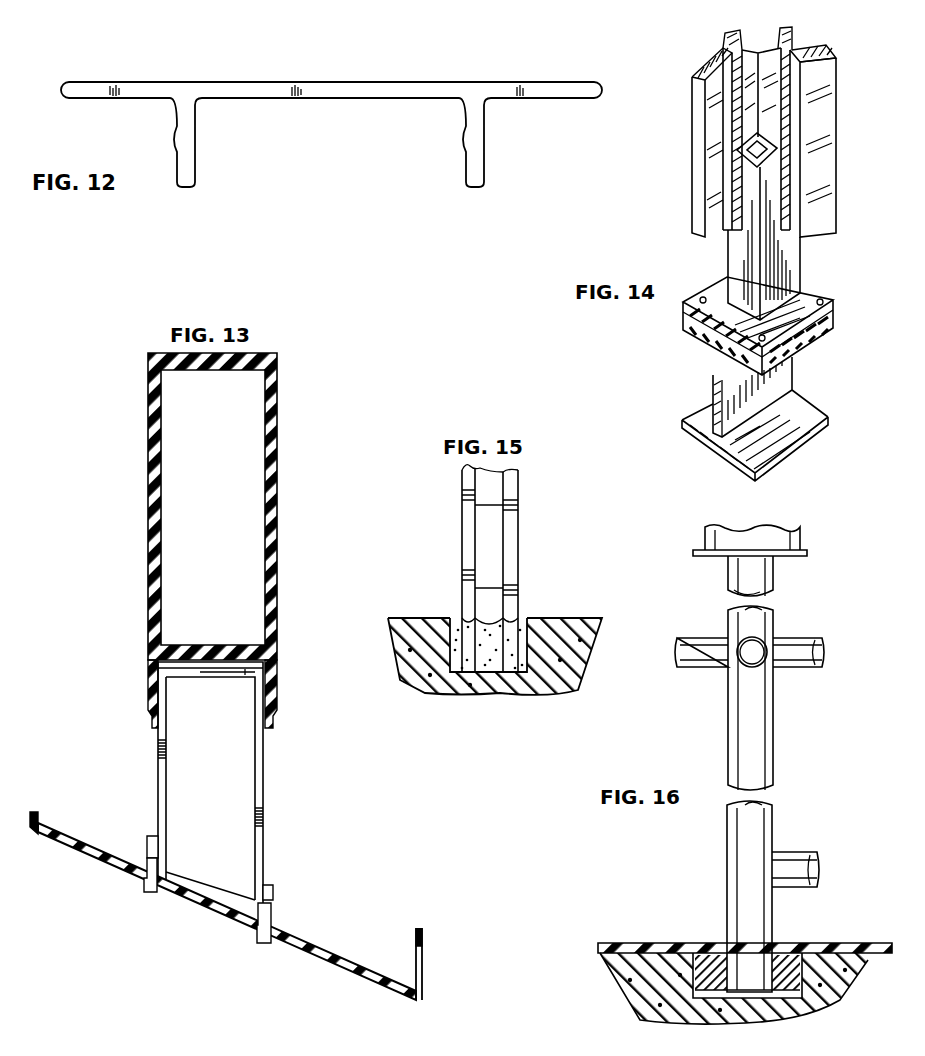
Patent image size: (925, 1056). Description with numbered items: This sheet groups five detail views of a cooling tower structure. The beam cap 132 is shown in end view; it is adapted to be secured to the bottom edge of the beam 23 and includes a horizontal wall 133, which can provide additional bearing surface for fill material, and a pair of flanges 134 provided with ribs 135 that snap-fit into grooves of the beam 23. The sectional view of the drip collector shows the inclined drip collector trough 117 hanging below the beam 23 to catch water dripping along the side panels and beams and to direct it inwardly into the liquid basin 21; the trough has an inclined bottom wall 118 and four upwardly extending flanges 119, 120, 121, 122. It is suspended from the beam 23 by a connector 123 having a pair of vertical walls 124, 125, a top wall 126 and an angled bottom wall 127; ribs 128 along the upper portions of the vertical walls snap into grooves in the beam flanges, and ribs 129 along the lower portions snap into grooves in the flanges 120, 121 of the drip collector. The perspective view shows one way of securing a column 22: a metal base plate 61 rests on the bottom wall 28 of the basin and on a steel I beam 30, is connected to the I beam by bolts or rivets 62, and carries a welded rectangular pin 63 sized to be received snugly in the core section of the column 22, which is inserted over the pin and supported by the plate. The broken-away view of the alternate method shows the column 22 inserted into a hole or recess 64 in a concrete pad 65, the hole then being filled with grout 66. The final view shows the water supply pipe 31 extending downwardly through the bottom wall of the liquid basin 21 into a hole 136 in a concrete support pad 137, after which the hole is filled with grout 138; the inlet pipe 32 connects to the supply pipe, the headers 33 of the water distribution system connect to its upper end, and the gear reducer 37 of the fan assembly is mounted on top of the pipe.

In FIG. 12, the beam cap 132 is at (345, 85).
In FIG. 12, the horizontal wall 133 is at (232, 82).
In FIG. 12, the flanges 134 is at (195, 170).
In FIG. 12, the ribs 135 is at (173, 140).
In FIG. 14, the column 22 is at (836, 115).
In FIG. 15, the column 22 is at (512, 517).
In FIG. 14, the metal base plate 61 is at (805, 282).
In FIG. 14, the rectangular pin 63 is at (735, 257).
In FIG. 14, the bottom wall 28 is at (683, 316).
In FIG. 14, the bolts or rivets 62 is at (818, 303).
In FIG. 14, the steel I beam 30 is at (803, 400).
In FIG. 13, the beam 23 is at (152, 442).
In FIG. 13, the ribs 128 is at (153, 712).
In FIG. 13, the connector 123 is at (263, 797).
In FIG. 13, the top wall 126 is at (222, 677).
In FIG. 13, the vertical wall 124 is at (158, 753).
In FIG. 13, the vertical wall 125 is at (263, 830).
In FIG. 13, the angled bottom wall 127 is at (200, 888).
In FIG. 13, the inclined drip collector trough 117 is at (322, 952).
In FIG. 13, the inclined bottom wall 118 is at (322, 963).
In FIG. 13, the flange 119 is at (35, 818).
In FIG. 13, the flange 122 is at (423, 958).
In FIG. 13, the flange 120 is at (147, 836).
In FIG. 13, the flange 121 is at (273, 897).
In FIG. 13, the ribs 129 is at (142, 882).
In FIG. 15, the concrete pad 65 is at (412, 617).
In FIG. 15, the grout 66 is at (457, 673).
In FIG. 15, the hole or recess 64 is at (527, 640).
In FIG. 16, the gear reducer 37 is at (800, 540).
In FIG. 16, the inlet pipe 32 is at (790, 635).
In FIG. 16, the headers 33 is at (800, 673).
In FIG. 16, the water supply pipe 31 is at (732, 718).
In FIG. 16, the hole 136 is at (848, 950).
In FIG. 16, the concrete support pad 137 is at (620, 976).
In FIG. 16, the grout 138 is at (708, 943).
In FIG. 16, the liquid basin 21 is at (605, 944).